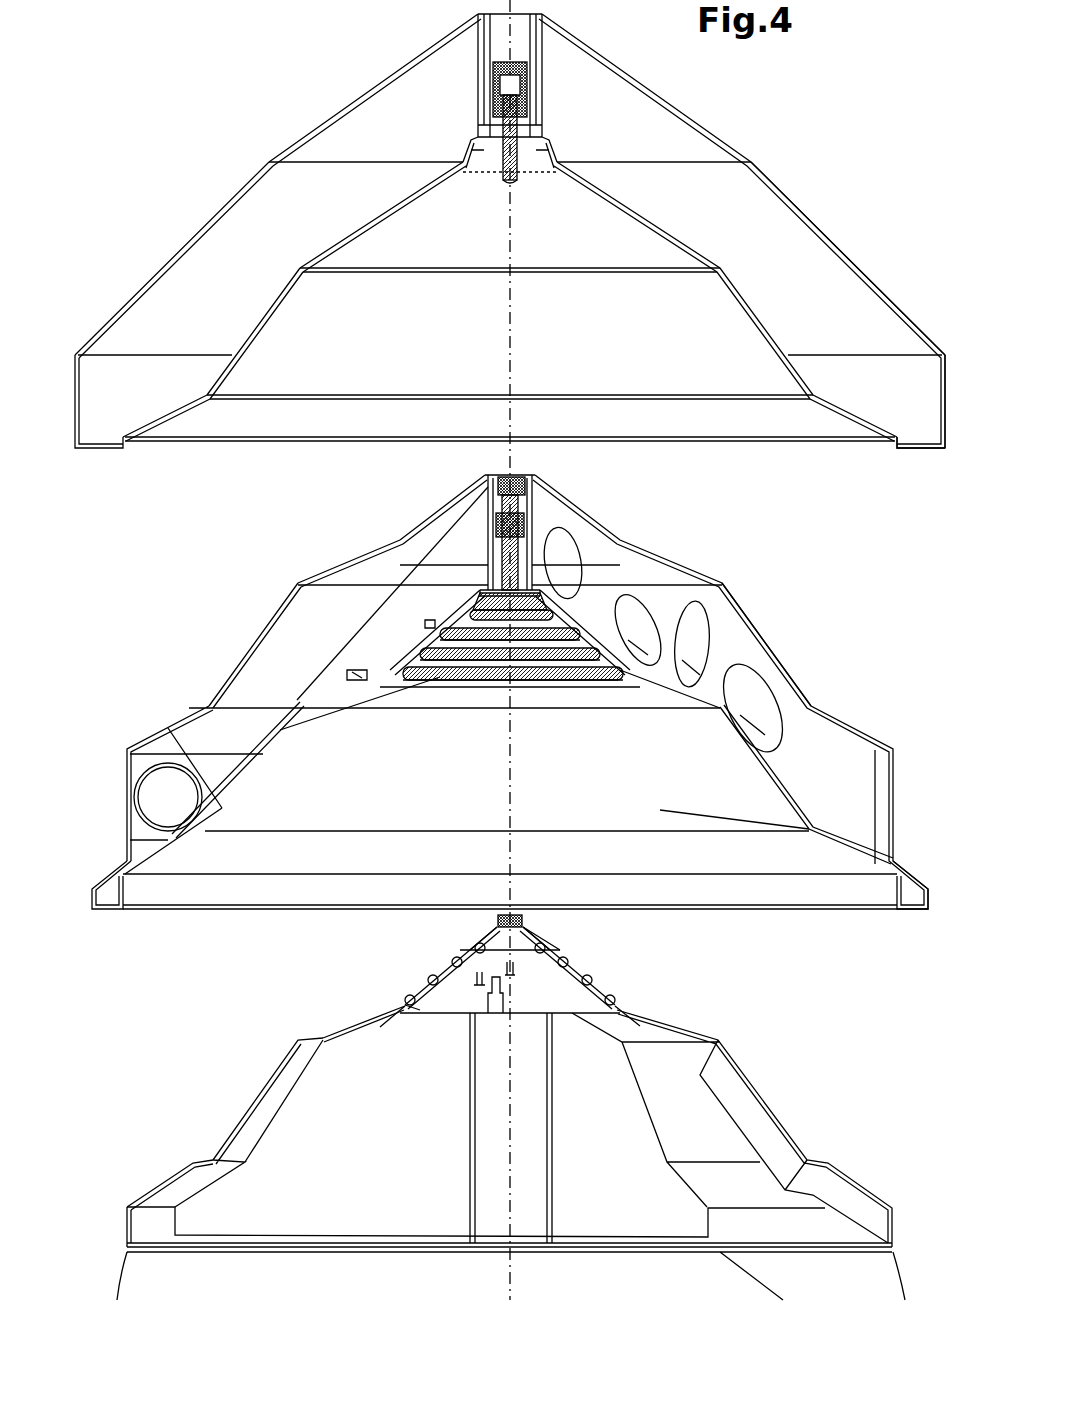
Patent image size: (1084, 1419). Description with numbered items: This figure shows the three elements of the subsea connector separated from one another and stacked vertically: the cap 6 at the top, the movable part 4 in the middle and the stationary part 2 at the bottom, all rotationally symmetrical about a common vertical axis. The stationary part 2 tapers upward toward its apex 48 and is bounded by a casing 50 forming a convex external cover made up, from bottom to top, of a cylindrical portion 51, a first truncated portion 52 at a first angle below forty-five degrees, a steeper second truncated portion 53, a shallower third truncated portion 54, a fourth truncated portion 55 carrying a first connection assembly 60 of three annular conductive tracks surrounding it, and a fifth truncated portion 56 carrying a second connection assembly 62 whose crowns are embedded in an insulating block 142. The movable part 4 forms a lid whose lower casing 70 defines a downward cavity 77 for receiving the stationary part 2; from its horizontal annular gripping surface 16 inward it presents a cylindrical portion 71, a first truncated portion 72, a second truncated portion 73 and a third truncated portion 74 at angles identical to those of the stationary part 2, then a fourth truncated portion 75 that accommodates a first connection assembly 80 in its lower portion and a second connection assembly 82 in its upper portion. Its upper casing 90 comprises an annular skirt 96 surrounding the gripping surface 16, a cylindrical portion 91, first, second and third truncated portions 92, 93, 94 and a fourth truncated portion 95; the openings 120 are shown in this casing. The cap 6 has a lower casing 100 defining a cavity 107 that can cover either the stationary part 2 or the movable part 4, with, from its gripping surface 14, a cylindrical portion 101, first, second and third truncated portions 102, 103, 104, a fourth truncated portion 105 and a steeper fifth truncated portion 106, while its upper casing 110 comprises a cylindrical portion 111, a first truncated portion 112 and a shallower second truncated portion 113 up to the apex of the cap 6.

The stationary part 2 is at (745, 1032).
The movable part 4 is at (782, 620).
The cap 6 is at (790, 173).
The gripping surface 14 is at (942, 452).
The gripping surface 16 is at (912, 915).
The apex 48 is at (497, 915).
The casing 50 is at (475, 1071).
The cylindrical portion 51 is at (125, 1233).
The first truncated portion 52 is at (165, 1180).
The second truncated portion 53 is at (255, 1100).
The third truncated portion 54 is at (347, 1027).
The fourth truncated portion 55 is at (447, 985).
The fifth truncated portion 56 is at (483, 930).
The first connection assembly 60 is at (584, 963).
The second connection assembly 62 is at (553, 940).
The lower casing 70 is at (768, 790).
The cylindrical portion 71 is at (123, 883).
The first truncated portion 72 is at (165, 855).
The second truncated portion 73 is at (246, 780).
The third truncated portion 74 is at (352, 692).
The fourth truncated portion 75 is at (415, 634).
The cavity 77 is at (665, 812).
The first connection assembly 80 is at (578, 660).
The second connection assembly 82 is at (466, 602).
The upper casing 90 is at (499, 725).
The cylindrical portion 91 is at (130, 797).
The first truncated portion 92 is at (151, 724).
The second truncated portion 93 is at (266, 626).
The third truncated portion 94 is at (298, 582).
The fourth truncated portion 95 is at (408, 534).
The annular skirt 96 is at (112, 872).
The lower casing 100 is at (510, 256).
The cylindrical portion 101 is at (872, 452).
The first truncated portion 102 is at (150, 436).
The second truncated portion 103 is at (252, 300).
The third truncated portion 104 is at (335, 270).
The fourth truncated portion 105 is at (422, 205).
The fifth truncated portion 106 is at (556, 157).
The cavity 107 is at (678, 378).
The upper casing 110 is at (500, 267).
The cylindrical portion 111 is at (76, 352).
The first truncated portion 112 is at (184, 248).
The second truncated portion 113 is at (424, 62).
The openings 120 is at (588, 605).
The insulating block 142 is at (418, 992).